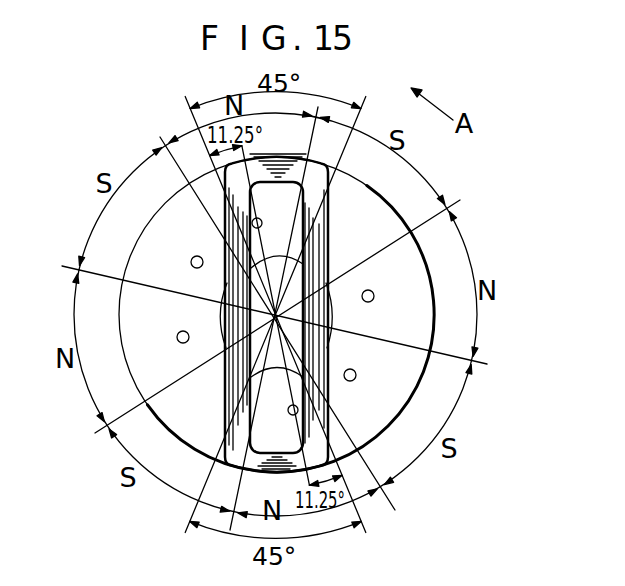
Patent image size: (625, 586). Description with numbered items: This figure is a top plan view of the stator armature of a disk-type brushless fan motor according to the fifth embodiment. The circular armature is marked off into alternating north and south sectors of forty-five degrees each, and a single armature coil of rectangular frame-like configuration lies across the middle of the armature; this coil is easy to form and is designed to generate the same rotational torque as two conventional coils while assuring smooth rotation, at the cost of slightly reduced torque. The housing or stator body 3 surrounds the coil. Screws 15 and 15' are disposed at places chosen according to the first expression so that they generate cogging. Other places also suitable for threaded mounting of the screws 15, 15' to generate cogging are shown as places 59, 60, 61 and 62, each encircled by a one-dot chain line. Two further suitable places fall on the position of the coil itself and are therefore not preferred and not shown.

The housing 3 is at (410, 402).
The screw 15 is at (314, 237).
The screw 15' is at (276, 426).
The place suitable for threaded mounting of screw 59 is at (374, 295).
The place suitable for threaded mounting of screw 60 is at (355, 380).
The place suitable for threaded mounting of screw 61 is at (177, 340).
The place suitable for threaded mounting of screw 62 is at (191, 262).